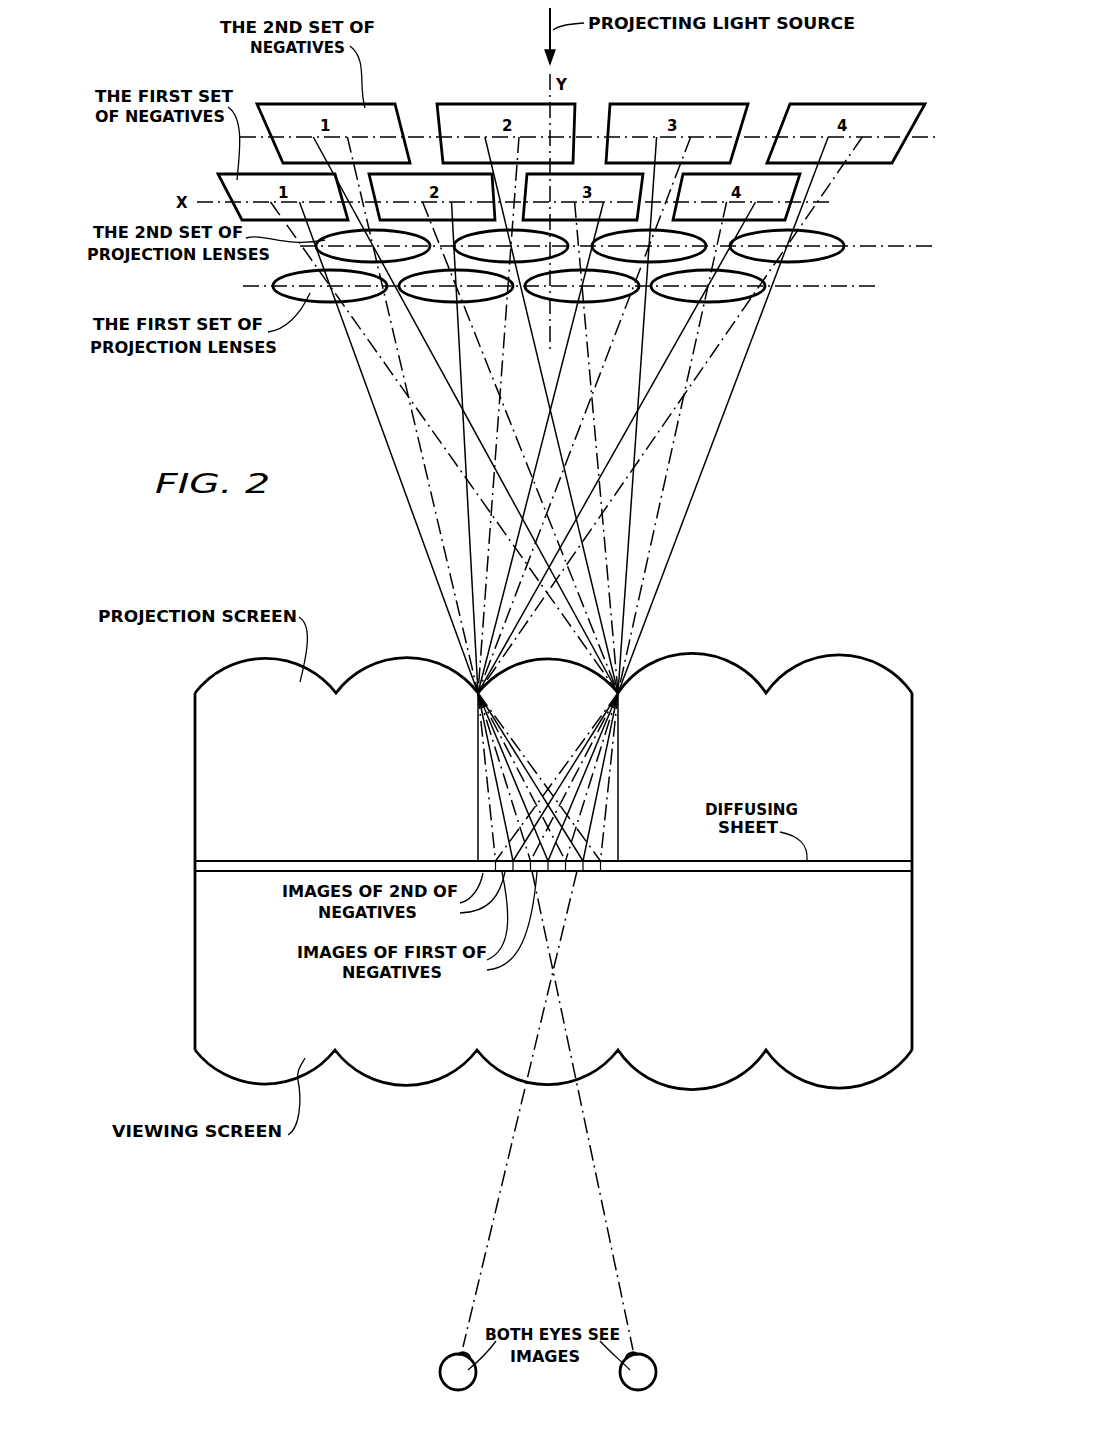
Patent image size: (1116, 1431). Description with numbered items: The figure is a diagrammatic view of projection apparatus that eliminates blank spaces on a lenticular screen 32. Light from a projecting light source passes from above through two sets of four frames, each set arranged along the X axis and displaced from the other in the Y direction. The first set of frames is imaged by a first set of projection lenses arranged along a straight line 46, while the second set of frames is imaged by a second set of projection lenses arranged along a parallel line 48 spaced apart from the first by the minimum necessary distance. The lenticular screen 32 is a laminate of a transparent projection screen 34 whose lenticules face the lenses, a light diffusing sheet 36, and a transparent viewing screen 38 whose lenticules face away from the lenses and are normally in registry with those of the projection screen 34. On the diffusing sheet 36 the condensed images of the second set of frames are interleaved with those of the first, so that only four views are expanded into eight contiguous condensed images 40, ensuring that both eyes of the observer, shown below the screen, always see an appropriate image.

The lenticular screen 32 is at (878, 661).
The projection screen 34 is at (300, 777).
The light diffusing sheet 36 is at (787, 872).
The viewing screen 38 is at (718, 985).
The condensed images 40 is at (596, 872).
The first line of projection lenses 46 is at (843, 287).
The second line of projection lenses 48 is at (905, 248).